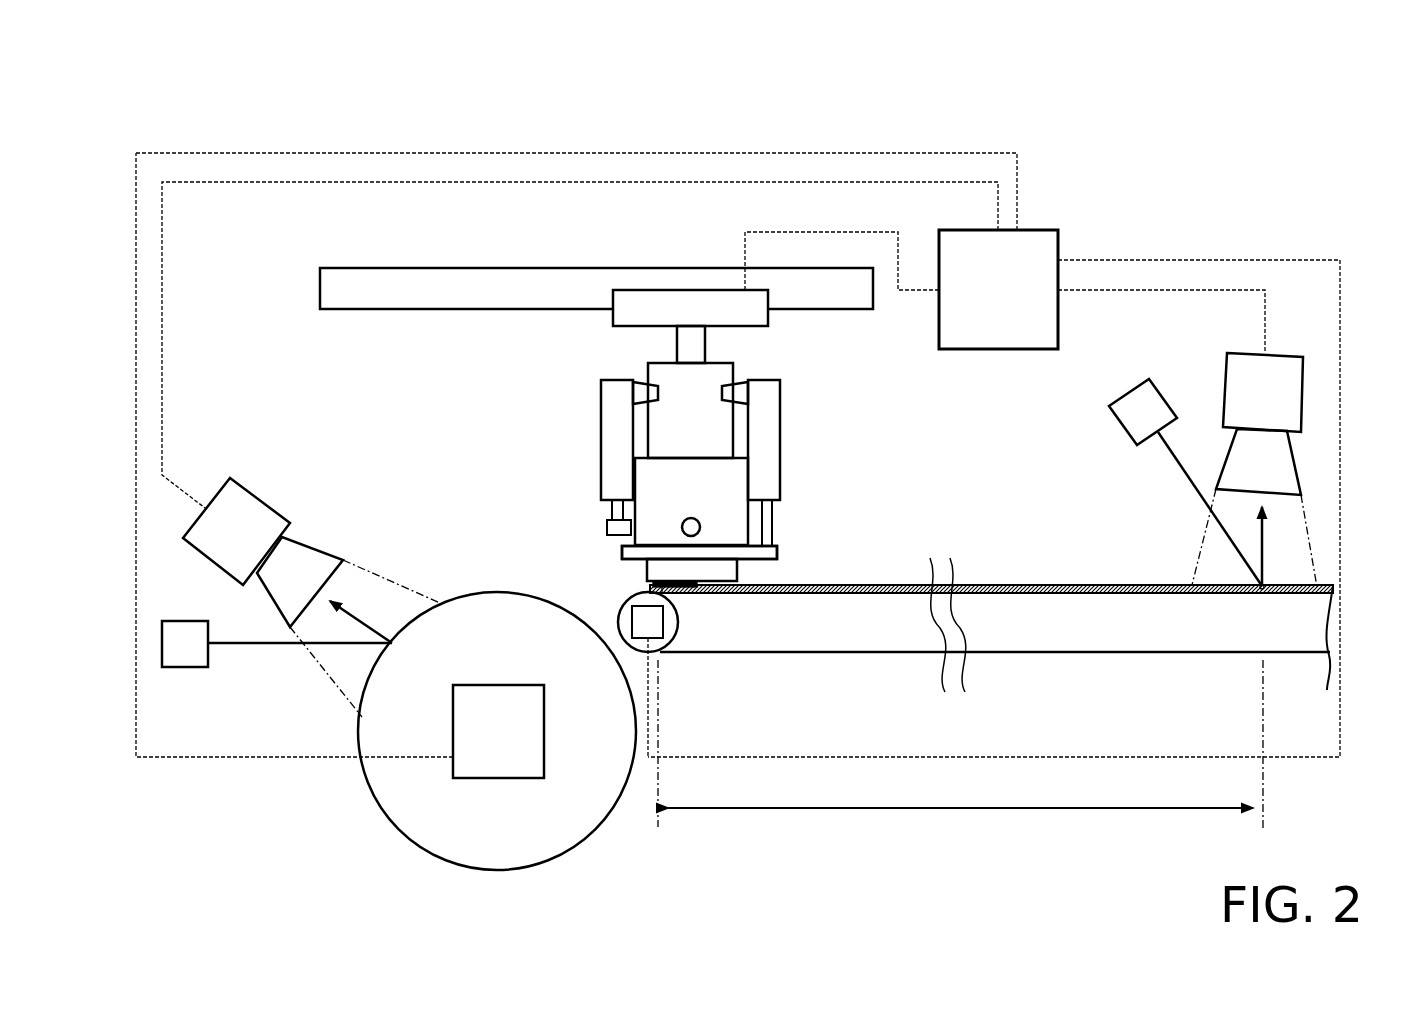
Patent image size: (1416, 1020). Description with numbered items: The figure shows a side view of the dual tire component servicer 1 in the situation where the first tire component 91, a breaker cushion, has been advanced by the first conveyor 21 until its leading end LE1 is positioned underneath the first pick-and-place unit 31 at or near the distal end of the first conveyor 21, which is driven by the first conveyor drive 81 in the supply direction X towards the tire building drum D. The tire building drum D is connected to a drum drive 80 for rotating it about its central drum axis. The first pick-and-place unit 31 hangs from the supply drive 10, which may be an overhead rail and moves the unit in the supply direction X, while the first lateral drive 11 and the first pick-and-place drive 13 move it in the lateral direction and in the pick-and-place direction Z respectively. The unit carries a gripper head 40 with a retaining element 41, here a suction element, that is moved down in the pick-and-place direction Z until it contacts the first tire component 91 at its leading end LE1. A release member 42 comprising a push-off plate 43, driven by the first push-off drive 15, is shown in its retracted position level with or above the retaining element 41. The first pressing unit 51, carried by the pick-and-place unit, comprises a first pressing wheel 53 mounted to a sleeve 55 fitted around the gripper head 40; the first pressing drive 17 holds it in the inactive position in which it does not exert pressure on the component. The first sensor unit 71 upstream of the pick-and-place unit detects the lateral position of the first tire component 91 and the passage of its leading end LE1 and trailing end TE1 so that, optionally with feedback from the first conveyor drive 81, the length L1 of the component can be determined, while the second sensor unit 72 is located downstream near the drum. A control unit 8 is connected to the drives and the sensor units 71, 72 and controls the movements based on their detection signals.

The dual tire component servicer 1 is at (1236, 152).
The control unit 8 is at (998, 289).
The supply drive 10 is at (421, 268).
The first lateral drive 11 is at (678, 290).
The first pick-and-place drive 13 is at (700, 327).
The first push-off drive 15 is at (780, 388).
The first pressing drive 17 is at (610, 432).
The first conveyor 21 is at (1040, 605).
The first pick-and-place unit 31 is at (596, 323).
The gripper head 40 is at (652, 567).
The retaining element 41 is at (703, 582).
The release member 42 is at (765, 549).
The push-off plate 43 is at (699, 552).
The first pressing unit 51 is at (572, 404).
The first pressing wheel 53 is at (740, 535).
The sleeve 55 is at (690, 468).
The first sensor unit 71 is at (1323, 329).
The second sensor unit 72 is at (168, 556).
The drum drive 80 is at (498, 731).
The first conveyor drive 81 is at (632, 620).
The first tire component 91 is at (1098, 585).
The tire building drum D is at (432, 852).
The leading end LE1 is at (645, 592).
The trailing end TE1 is at (1262, 587).
The length L1 is at (960, 756).
The supply direction X is at (580, 332).
The pick-and-place direction Z is at (823, 398).